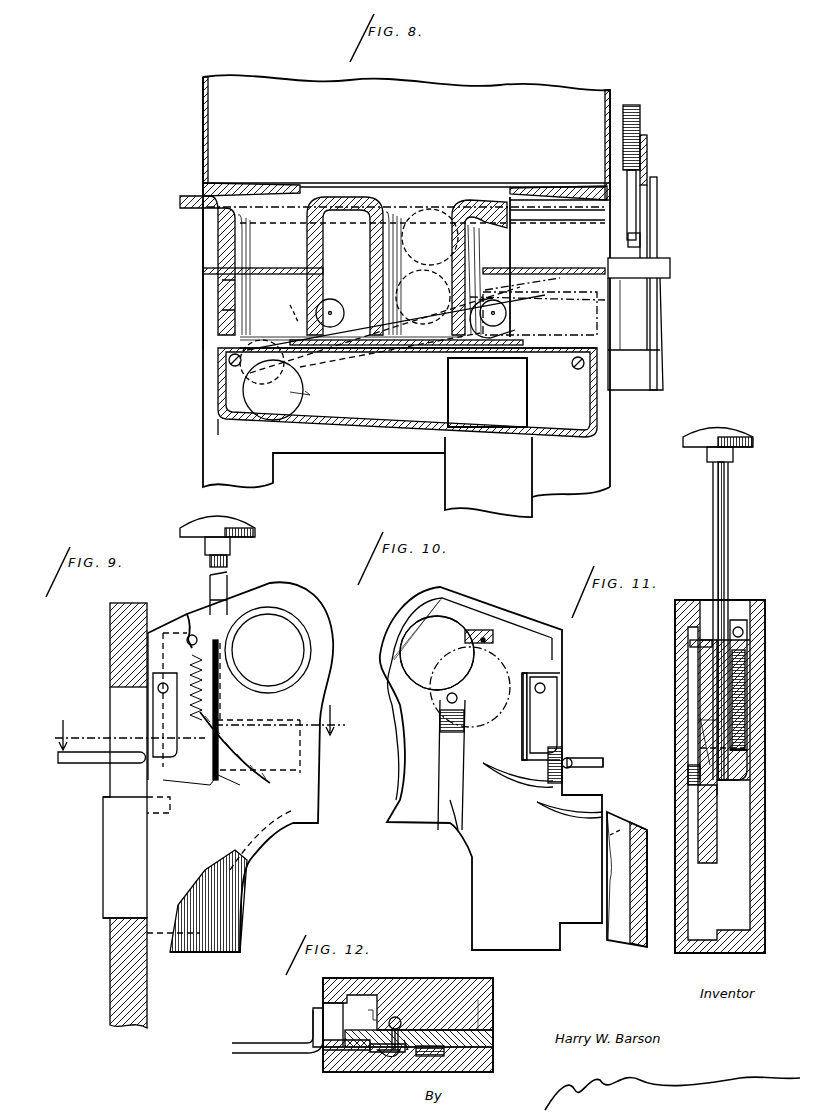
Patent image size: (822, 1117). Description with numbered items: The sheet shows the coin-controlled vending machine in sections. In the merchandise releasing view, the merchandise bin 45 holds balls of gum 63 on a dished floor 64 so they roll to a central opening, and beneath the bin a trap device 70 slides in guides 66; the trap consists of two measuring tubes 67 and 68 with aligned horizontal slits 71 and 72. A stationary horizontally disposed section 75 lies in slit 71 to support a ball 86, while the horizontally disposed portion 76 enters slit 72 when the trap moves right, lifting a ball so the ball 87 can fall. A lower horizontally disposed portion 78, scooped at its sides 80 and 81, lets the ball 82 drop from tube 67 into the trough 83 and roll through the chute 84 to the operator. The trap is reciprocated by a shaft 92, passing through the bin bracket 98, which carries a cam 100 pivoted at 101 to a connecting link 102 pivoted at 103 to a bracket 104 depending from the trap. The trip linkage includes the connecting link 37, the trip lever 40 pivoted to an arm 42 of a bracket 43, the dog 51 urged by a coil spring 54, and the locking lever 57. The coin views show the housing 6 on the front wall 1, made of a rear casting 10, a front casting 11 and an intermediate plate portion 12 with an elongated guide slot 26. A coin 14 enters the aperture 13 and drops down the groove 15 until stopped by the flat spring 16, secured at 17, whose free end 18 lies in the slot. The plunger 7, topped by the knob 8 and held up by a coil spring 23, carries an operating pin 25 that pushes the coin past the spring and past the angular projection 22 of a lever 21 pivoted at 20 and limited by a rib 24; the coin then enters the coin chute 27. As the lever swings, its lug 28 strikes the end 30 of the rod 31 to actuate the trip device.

In FIG. 9, the front wall 1 is at (110, 984).
In FIG. 12, the housing 6 is at (493, 1004).
In FIG. 11, the plunger 7 is at (728, 512).
In FIG. 12, the plunger 7 is at (396, 1016).
In FIG. 9, the handle or knob 8 is at (217, 565).
In FIG. 11, the handle or knob 8 is at (740, 427).
In FIG. 9, the casting 10 is at (237, 903).
In FIG. 10, the casting 10 is at (408, 700).
In FIG. 11, the casting 10 is at (752, 643).
In FIG. 12, the casting 10 is at (445, 995).
In FIG. 9, the second casting 11 is at (300, 785).
In FIG. 10, the second casting 11 is at (385, 668).
In FIG. 11, the second casting 11 is at (675, 633).
In FIG. 12, the second casting 11 is at (470, 1072).
In FIG. 9, the intermediate plate portion 12 is at (262, 853).
In FIG. 10, the intermediate plate portion 12 is at (402, 740).
In FIG. 11, the intermediate plate portion 12 is at (700, 620).
In FIG. 12, the intermediate plate portion 12 is at (493, 1043).
In FIG. 9, the aperture 13 is at (295, 632).
In FIG. 10, the aperture 13 is at (418, 612).
In FIG. 10, the coin 14 is at (440, 657).
In FIG. 11, the coin 14 is at (698, 728).
In FIG. 9, the groove 15 is at (216, 748).
In FIG. 10, the groove 15 is at (420, 765).
In FIG. 11, the groove 15 is at (693, 808).
In FIG. 12, the groove 15 is at (388, 1060).
In FIG. 10, the flat spring 16 is at (416, 702).
In FIG. 12, the flat spring 16 is at (406, 1060).
In FIG. 10, the spring securing point 17 is at (458, 695).
In FIG. 10, the free end 18 is at (440, 735).
In FIG. 10, the pivot 20 is at (548, 688).
In FIG. 10, the lever 21 is at (560, 715).
In FIG. 11, the lever 21 is at (710, 735).
In FIG. 12, the lever 21 is at (325, 1055).
In FIG. 10, the angular projection 22 is at (505, 800).
In FIG. 11, the angular projection 22 is at (688, 775).
In FIG. 9, the coil spring 23 is at (188, 664).
In FIG. 11, the coil spring 23 is at (745, 678).
In FIG. 10, the rib 24 is at (520, 748).
In FIG. 12, the rib 24 is at (380, 1052).
In FIG. 10, the operating pin 25 is at (494, 639).
In FIG. 11, the operating pin 25 is at (692, 645).
In FIG. 9, the elongated guide slot 26 is at (222, 720).
In FIG. 12, the elongated guide slot 26 is at (410, 1058).
In FIG. 10, the coin chute 27 is at (635, 912).
In FIG. 10, the lug 28 is at (556, 752).
In FIG. 12, the lug 28 is at (326, 1015).
In FIG. 10, the rod end 30 is at (569, 768).
In FIG. 12, the rod end 30 is at (313, 1020).
In FIG. 9, the rod 31 is at (70, 765).
In FIG. 10, the rod 31 is at (599, 760).
In FIG. 12, the rod 31 is at (241, 1043).
In FIG. 8, the connecting link 37 is at (647, 148).
In FIG. 8, the trip lever 40 is at (657, 210).
In FIG. 8, the arm 42 is at (664, 313).
In FIG. 8, the bracket 43 is at (636, 382).
In FIG. 8, the merchandise bin 45 is at (203, 112).
In FIG. 8, the dog 51 is at (640, 240).
In FIG. 8, the coil spring 54 is at (640, 118).
In FIG. 8, the locking lever 57 is at (626, 283).
In FIG. 8, the balls of gum 63 is at (420, 205).
In FIG. 8, the floor 64 is at (262, 185).
In FIG. 8, the guides 66 is at (558, 205).
In FIG. 8, the measuring tube 67 is at (222, 308).
In FIG. 8, the measuring tube 68 is at (438, 292).
In FIG. 8, the trap device 70 is at (497, 222).
In FIG. 8, the slit 71 is at (220, 282).
In FIG. 8, the slit 72 is at (368, 278).
In FIG. 8, the horizontally disposed section 75 is at (203, 270).
In FIG. 8, the horizontally disposed portion 76 is at (572, 262).
In FIG. 8, the horizontally disposed portion 78 is at (440, 400).
In FIG. 8, the scooped side 80 is at (296, 340).
In FIG. 8, the scooped side 81 is at (522, 348).
In FIG. 8, the ball of gum 82 is at (218, 400).
In FIG. 8, the trough 83 is at (345, 428).
In FIG. 8, the chute 84 is at (445, 482).
In FIG. 8, the ball of gum 86 is at (218, 240).
In FIG. 8, the ball 87 is at (432, 345).
In FIG. 8, the shaft 92 is at (332, 308).
In FIG. 8, the bracket 98 is at (203, 465).
In FIG. 8, the cam 100 is at (292, 306).
In FIG. 8, the pivot 101 is at (247, 348).
In FIG. 8, the connecting link 102 is at (350, 368).
In FIG. 8, the pivot 103 is at (508, 311).
In FIG. 8, the bracket 104 is at (505, 285).